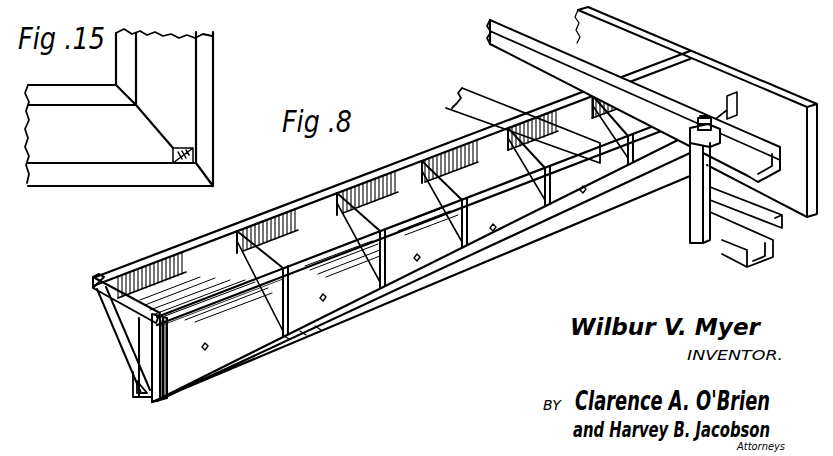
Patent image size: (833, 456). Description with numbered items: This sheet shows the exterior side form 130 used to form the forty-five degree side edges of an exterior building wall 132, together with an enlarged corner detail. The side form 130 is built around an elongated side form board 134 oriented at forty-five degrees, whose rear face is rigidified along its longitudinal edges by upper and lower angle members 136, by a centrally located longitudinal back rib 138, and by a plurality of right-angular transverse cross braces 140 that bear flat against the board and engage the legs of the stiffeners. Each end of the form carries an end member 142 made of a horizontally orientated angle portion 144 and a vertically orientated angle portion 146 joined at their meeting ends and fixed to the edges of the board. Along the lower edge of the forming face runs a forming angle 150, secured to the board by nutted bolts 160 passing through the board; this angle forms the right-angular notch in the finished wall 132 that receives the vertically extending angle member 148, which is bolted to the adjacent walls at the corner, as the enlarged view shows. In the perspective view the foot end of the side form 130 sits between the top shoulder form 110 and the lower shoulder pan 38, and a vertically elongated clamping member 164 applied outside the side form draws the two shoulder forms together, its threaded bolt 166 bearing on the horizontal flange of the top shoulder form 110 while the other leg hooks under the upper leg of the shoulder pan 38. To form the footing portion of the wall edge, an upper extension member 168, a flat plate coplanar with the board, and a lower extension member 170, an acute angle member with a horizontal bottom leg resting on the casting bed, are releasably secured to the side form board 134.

In FIG. 8, the lower shoulder pan 38 is at (735, 250).
In FIG. 8, the top shoulder form 110 is at (755, 146).
In FIG. 8, the side form 130 is at (325, 188).
In FIG. 15, the exterior building wall 132 is at (214, 66).
In FIG. 8, the side form board 134 is at (205, 278).
In FIG. 8, the angle members 136 is at (133, 273).
In FIG. 8, the back rib 138 is at (336, 258).
In FIG. 8, the cross braces 140 is at (502, 164).
In FIG. 8, the end members 142 is at (137, 315).
In FIG. 8, the horizontally orientated angle portion 144 is at (94, 284).
In FIG. 8, the vertically orientated angle portion 146 is at (153, 354).
In FIG. 15, the vertically extending angle member 148 is at (172, 155).
In FIG. 8, the forming angle 150 is at (137, 397).
In FIG. 8, the nutted bolts 160 is at (327, 301).
In FIG. 8, the clamping member 164 is at (689, 210).
In FIG. 8, the threaded bolt 166 is at (729, 100).
In FIG. 8, the upper extension member 168 is at (653, 60).
In FIG. 8, the lower extension member 170 is at (722, 179).